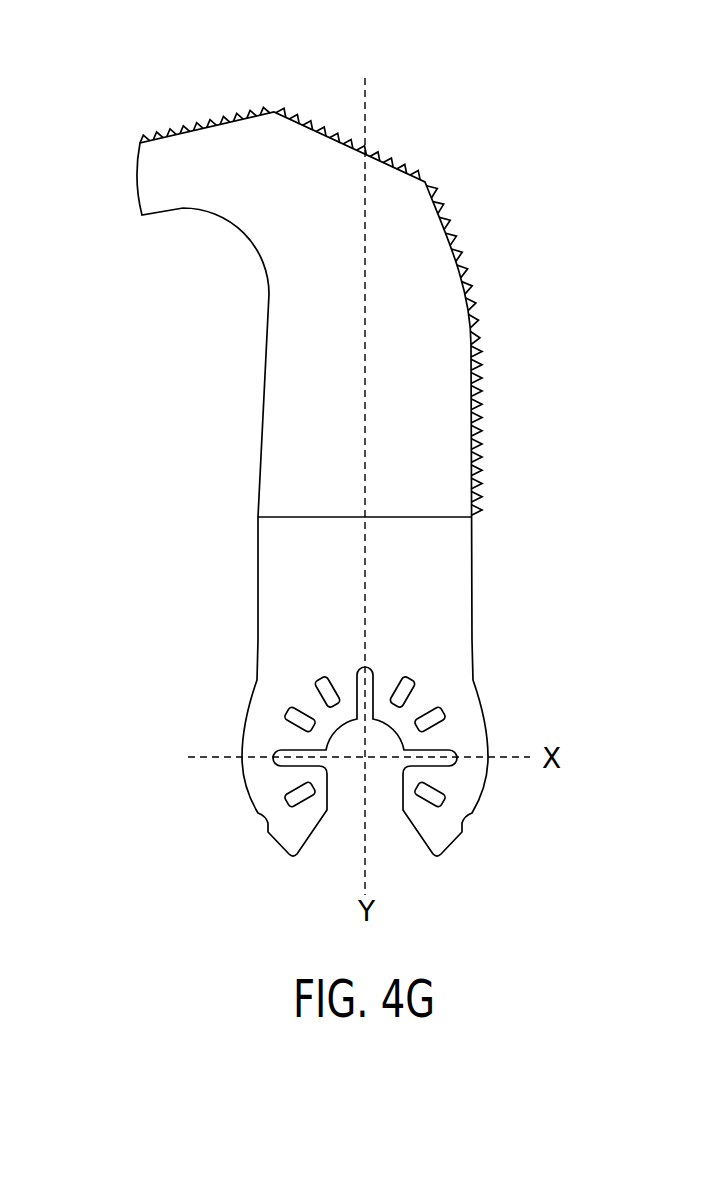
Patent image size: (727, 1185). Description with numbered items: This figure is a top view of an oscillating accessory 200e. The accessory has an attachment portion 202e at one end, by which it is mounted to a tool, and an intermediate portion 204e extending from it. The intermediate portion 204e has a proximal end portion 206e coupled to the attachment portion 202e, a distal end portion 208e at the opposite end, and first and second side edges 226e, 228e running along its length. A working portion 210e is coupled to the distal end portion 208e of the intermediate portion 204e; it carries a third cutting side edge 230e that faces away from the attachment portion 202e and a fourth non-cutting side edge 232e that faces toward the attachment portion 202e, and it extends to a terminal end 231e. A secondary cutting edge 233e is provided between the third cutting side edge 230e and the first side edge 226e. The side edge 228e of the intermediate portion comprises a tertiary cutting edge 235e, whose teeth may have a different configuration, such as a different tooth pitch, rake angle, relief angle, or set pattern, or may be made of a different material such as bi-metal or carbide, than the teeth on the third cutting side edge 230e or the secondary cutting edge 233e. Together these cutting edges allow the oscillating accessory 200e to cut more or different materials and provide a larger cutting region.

The oscillating accessory 200e is at (318, 87).
The attachment portion 202e is at (225, 786).
The intermediate portion 204e is at (246, 374).
The proximal end portion 206e is at (320, 480).
The distal end portion 208e is at (400, 197).
The working portion 210e is at (220, 92).
The first side edge 226e is at (478, 417).
The second side edge 228e is at (263, 413).
The third cutting side edge 230e is at (168, 132).
The terminal end 231e is at (135, 178).
The fourth non-cutting side edge 232e is at (180, 210).
The secondary cutting edge 233e is at (378, 157).
The tertiary cutting edge 235e is at (477, 345).